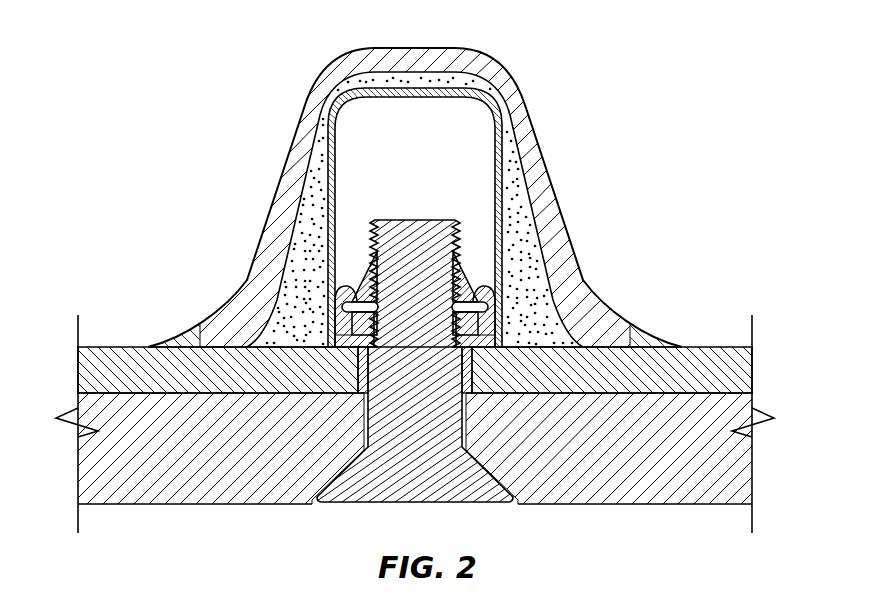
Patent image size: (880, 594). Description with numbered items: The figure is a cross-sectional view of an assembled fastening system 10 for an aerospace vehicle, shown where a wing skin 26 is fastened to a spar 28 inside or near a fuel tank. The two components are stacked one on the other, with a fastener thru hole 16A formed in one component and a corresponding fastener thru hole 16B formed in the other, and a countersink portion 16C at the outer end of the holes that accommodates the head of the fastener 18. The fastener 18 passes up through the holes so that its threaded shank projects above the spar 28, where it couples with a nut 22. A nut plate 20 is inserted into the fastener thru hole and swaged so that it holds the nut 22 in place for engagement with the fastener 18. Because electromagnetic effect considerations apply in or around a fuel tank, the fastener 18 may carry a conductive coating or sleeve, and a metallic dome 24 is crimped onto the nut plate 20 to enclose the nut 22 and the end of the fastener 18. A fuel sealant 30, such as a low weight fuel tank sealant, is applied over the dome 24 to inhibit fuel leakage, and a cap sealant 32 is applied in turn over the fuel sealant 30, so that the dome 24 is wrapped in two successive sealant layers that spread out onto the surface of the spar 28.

The fastening system 10 is at (128, 76).
The fastener thru hole 16A is at (352, 375).
The fastener thru hole 16B is at (358, 413).
The countersink portion 16C is at (314, 487).
The fastener 18 is at (428, 407).
The nut plate 20 is at (342, 323).
The nut 22 is at (375, 268).
The dome 24 is at (500, 152).
The wing skin 26 is at (646, 463).
The spar 28 is at (646, 386).
The fuel sealant 30 is at (523, 262).
The cap sealant 32 is at (490, 66).